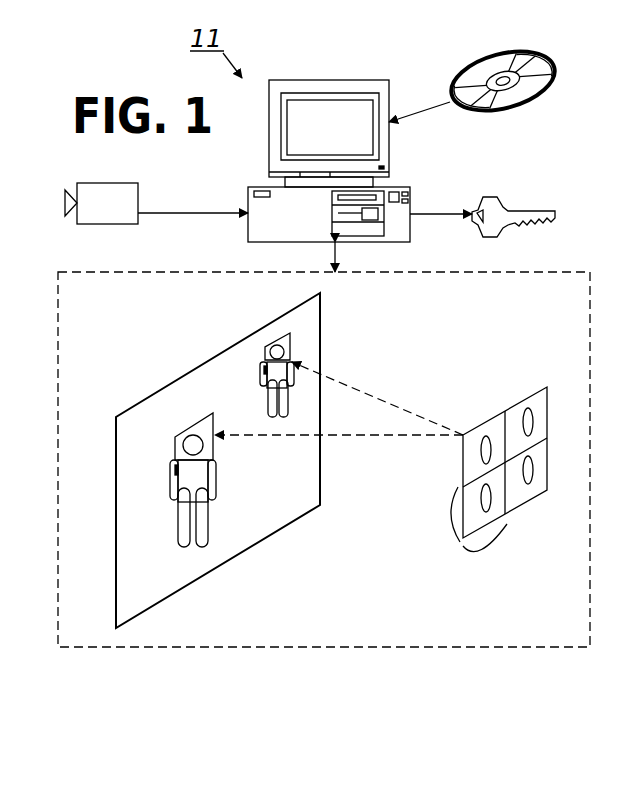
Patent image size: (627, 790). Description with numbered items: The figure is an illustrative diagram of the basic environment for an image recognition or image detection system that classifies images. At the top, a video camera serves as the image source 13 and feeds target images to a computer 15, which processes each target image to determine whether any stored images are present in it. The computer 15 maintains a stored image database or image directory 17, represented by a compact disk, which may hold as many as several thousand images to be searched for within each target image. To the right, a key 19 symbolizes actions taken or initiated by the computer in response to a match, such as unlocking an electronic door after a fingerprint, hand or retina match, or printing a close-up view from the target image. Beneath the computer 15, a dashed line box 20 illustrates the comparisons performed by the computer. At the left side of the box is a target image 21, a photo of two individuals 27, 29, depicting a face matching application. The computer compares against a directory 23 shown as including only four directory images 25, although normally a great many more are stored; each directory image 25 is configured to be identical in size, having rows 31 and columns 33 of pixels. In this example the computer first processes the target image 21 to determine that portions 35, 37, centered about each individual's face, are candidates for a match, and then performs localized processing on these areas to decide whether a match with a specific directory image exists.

The image source 13 is at (138, 224).
The computer 15 is at (313, 80).
The image directory 17 is at (523, 103).
The key 19 is at (517, 207).
The dashed line box 20 is at (453, 647).
The target image 21 is at (115, 510).
The directory 23 is at (513, 408).
The directory images 25 is at (528, 424).
The individual 27 is at (178, 473).
The individual 29 is at (263, 372).
The rows 31 is at (447, 510).
The columns 33 is at (492, 548).
The portion 35 is at (187, 425).
The portion 37 is at (288, 360).